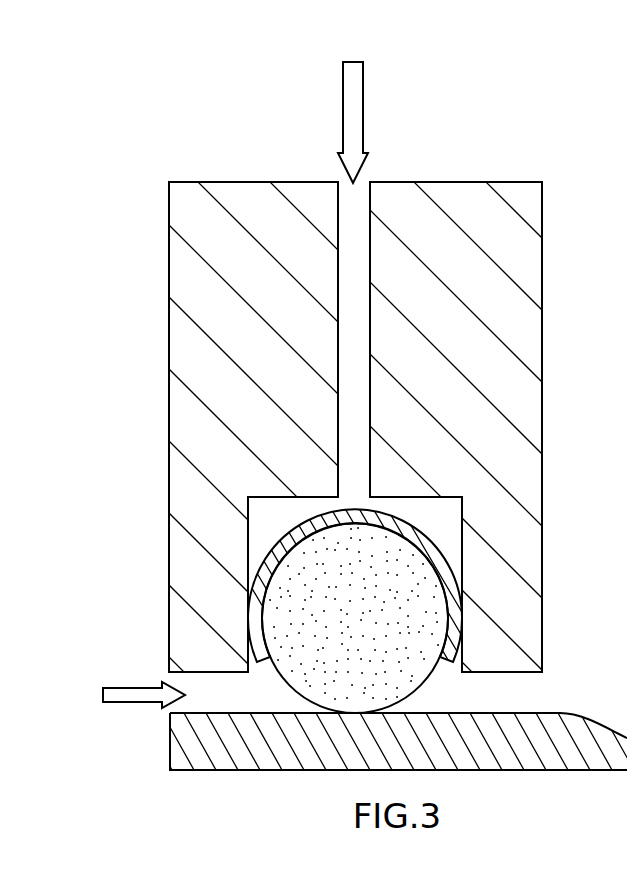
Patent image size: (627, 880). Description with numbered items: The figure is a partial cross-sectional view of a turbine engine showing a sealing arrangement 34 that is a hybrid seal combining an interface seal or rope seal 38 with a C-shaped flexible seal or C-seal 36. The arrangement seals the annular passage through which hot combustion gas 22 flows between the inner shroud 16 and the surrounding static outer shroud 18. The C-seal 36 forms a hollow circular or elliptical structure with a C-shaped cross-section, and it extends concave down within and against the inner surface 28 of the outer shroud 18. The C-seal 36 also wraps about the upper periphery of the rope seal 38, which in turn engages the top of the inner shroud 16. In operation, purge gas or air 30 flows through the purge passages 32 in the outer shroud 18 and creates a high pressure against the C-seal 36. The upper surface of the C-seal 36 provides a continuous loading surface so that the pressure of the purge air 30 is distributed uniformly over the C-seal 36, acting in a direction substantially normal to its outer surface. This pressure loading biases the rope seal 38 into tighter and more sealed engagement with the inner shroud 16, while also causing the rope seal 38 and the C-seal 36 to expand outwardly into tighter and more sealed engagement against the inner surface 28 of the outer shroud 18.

The inner shroud 16 is at (258, 770).
The outer shroud 18 is at (522, 423).
The hot combustion gas 22 is at (150, 705).
The inner surface 28 is at (248, 557).
The purge air 30 is at (363, 107).
The purge passages 32 is at (350, 405).
The sealing arrangement 34 is at (213, 70).
The C-seal 36 is at (437, 543).
The rope seal 38 is at (423, 687).